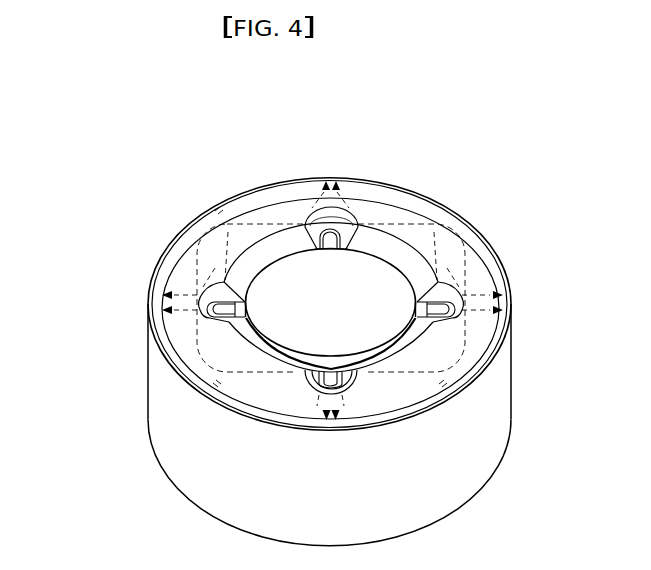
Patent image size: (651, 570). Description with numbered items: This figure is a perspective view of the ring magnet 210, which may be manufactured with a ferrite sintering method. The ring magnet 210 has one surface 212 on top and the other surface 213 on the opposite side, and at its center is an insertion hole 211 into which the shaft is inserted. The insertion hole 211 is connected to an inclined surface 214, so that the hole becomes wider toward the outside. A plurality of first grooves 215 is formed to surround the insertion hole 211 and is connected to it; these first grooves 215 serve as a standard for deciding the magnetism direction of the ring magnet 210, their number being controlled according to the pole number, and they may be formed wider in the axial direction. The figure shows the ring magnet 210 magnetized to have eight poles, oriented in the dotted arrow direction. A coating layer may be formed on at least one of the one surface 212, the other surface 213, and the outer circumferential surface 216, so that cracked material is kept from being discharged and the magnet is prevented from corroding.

The ring magnet 210 is at (98, 250).
The insertion hole 211 is at (296, 298).
The one surface 212 is at (468, 344).
The other surface 213 is at (487, 490).
The inclined surface 214 is at (382, 226).
The first grooves 215 is at (340, 184).
The outer circumferential surface 216 is at (493, 398).